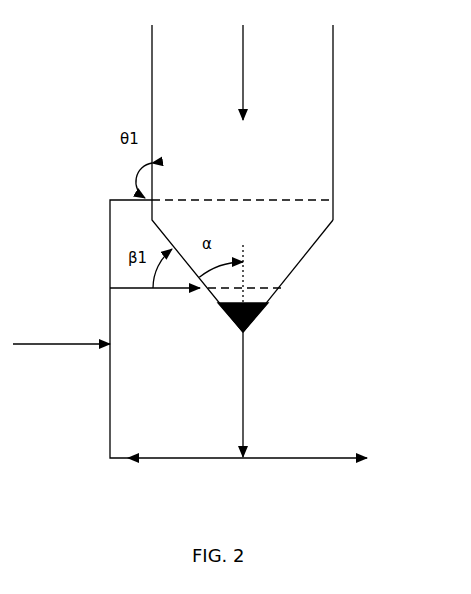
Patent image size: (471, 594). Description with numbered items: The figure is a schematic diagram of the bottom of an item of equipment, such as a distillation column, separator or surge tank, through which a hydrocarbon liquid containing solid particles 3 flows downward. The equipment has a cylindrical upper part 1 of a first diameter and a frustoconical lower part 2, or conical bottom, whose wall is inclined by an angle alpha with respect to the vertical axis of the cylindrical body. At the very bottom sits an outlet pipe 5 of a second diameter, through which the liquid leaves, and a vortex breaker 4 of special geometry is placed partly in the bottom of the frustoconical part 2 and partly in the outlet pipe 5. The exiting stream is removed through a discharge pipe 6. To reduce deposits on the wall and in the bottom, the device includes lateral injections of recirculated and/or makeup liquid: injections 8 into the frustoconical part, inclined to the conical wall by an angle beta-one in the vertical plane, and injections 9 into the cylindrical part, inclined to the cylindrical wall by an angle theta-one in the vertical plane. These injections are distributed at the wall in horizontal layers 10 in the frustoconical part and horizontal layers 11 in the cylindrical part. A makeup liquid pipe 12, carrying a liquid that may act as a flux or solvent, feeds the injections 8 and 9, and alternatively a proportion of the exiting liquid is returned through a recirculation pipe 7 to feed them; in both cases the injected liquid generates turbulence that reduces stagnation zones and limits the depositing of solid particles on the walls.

The cylindrical upper part 1 is at (333, 128).
The frustoconical lower part 2 is at (303, 258).
The hydrocarbon liquid containing solid particles 3 is at (243, 65).
The vortex breaker 4 is at (235, 320).
The outlet pipe 5 is at (245, 342).
The discharge pipe 6 is at (293, 458).
The recirculation pipe 7 is at (168, 458).
The injections into the frustoconical part 8 is at (135, 290).
The injections into the cylindrical part 9 is at (127, 195).
The horizontal layers in the frustoconical part 10 is at (277, 290).
The horizontal layers in the cylindrical part 11 is at (330, 227).
The makeup liquid pipe 12 is at (85, 342).